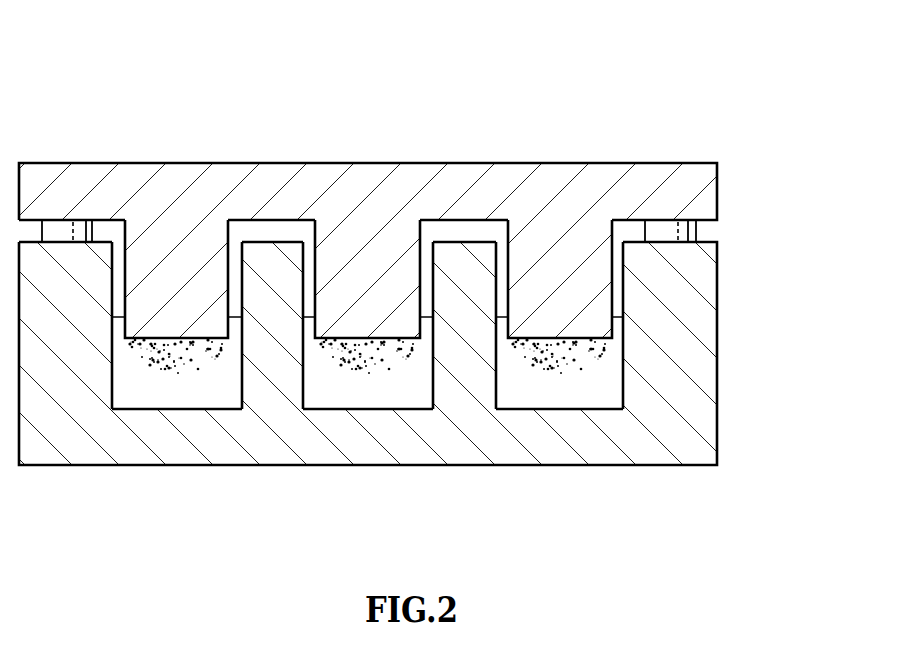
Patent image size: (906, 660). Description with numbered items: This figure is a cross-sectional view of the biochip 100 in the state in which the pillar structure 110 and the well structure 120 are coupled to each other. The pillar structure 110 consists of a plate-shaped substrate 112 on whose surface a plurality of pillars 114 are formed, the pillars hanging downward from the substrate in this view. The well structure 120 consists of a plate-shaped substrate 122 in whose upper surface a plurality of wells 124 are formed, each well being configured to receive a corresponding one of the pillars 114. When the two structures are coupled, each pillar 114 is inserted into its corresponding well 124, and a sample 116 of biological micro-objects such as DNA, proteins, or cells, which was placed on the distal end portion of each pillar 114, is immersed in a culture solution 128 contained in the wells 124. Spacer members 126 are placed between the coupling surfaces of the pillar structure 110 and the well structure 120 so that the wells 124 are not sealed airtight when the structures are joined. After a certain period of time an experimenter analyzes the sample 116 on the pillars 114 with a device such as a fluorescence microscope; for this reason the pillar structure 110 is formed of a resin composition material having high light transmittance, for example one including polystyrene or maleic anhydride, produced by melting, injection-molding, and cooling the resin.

The biochip 100 is at (118, 57).
The pillar structure 110 is at (363, 148).
The plate-shaped substrate 112 is at (716, 186).
The pillars 114 is at (612, 268).
The sample 116 is at (577, 352).
The well structure 120 is at (320, 492).
The plate-shaped substrate 122 is at (716, 313).
The wells 124 is at (615, 390).
The spacer members 126 is at (696, 228).
The culture solution 128 is at (562, 388).